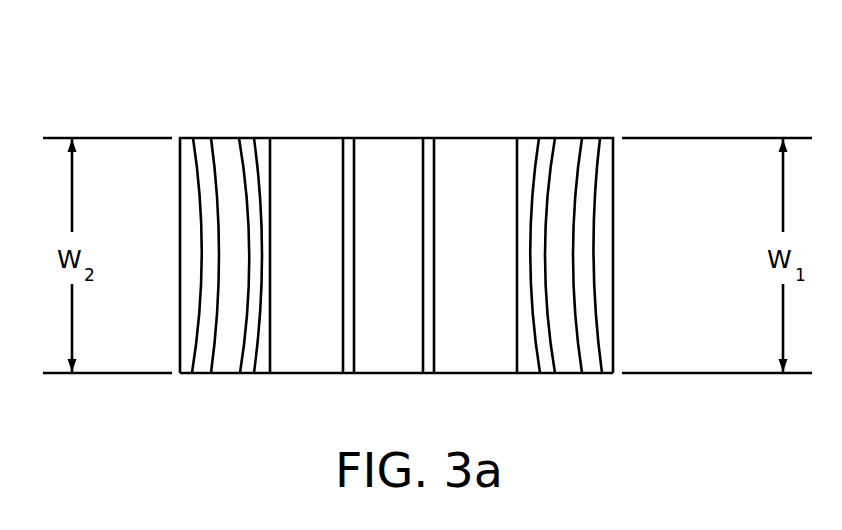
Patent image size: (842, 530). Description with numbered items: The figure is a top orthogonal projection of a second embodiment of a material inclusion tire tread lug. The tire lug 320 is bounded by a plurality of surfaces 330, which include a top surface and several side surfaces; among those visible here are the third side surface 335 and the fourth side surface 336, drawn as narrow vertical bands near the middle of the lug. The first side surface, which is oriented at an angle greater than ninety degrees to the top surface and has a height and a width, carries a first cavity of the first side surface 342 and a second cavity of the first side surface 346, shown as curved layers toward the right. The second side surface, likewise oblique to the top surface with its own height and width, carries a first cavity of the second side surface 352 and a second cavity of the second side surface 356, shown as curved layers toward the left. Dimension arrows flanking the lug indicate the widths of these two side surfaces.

The tire lug 320 is at (613, 285).
The surfaces 330 is at (303, 375).
The third side surface 335 is at (450, 375).
The fourth side surface 336 is at (302, 137).
The first cavity of the first side surface 342 is at (550, 137).
The second cavity of the first side surface 346 is at (600, 137).
The first cavity of the second side surface 352 is at (250, 137).
The second cavity of the second side surface 356 is at (202, 137).